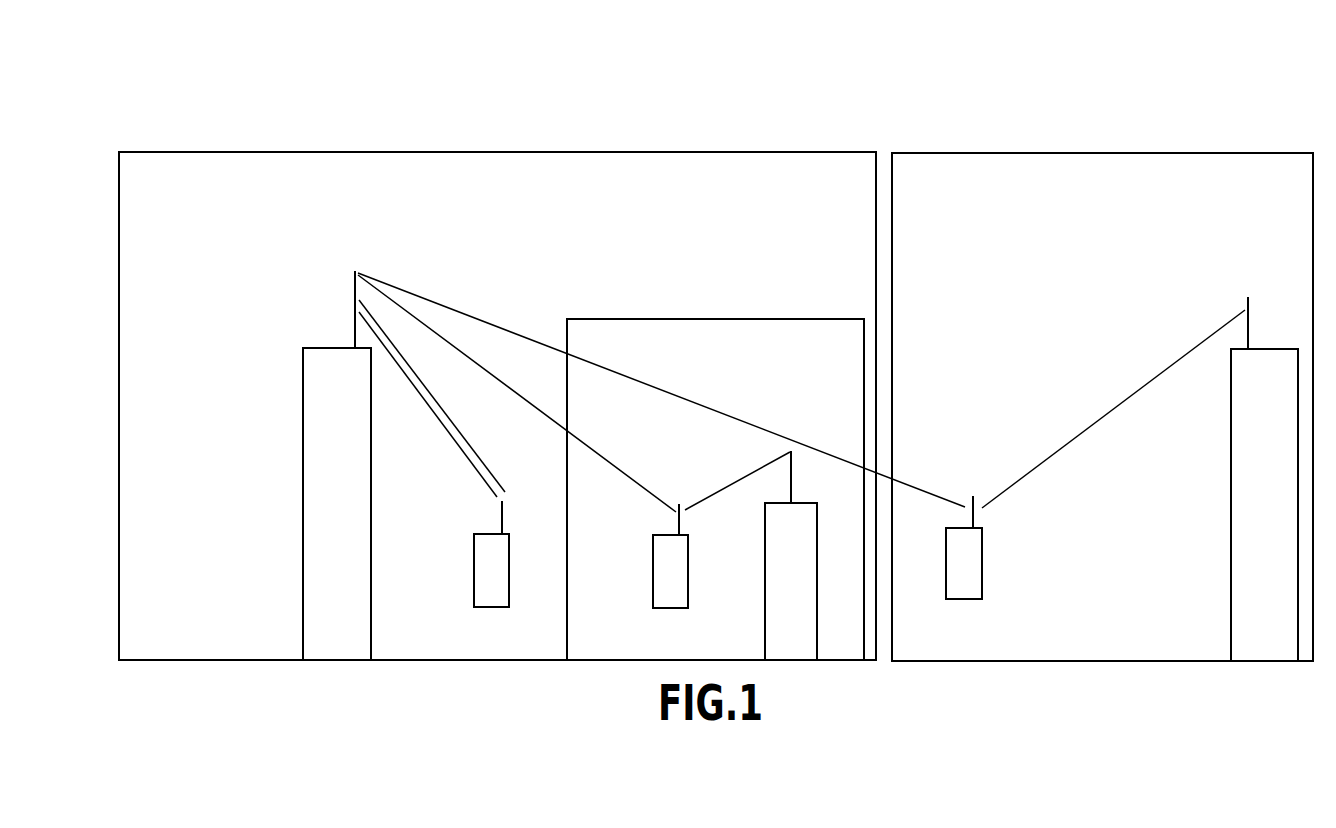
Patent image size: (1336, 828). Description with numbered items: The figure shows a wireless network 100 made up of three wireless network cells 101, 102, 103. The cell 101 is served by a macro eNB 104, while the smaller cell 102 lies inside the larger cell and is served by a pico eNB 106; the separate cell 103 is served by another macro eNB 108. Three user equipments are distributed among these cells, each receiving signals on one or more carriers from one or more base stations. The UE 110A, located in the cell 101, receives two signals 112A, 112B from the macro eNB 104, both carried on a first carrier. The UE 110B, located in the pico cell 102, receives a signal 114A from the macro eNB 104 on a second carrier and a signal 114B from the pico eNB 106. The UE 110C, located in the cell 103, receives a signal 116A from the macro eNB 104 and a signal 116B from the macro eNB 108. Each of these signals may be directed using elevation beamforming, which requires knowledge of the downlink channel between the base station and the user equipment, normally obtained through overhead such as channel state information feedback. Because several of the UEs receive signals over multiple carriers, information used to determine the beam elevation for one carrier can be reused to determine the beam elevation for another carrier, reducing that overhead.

The network 100 is at (192, 70).
The wireless network cell 101 is at (498, 152).
The wireless network cell 102 is at (806, 300).
The wireless network cell 103 is at (1103, 152).
The macro eNB 104 is at (333, 348).
The pico eNB 106 is at (765, 592).
The macro eNB 108 is at (1231, 592).
The UE 110A is at (474, 569).
The UE 110B is at (653, 569).
The UE 110C is at (982, 564).
The signal 112A is at (475, 469).
The signal 112B is at (505, 452).
The signal 114A is at (500, 380).
The signal 114B is at (736, 480).
The signal 116A is at (450, 303).
The signal 116B is at (1138, 388).